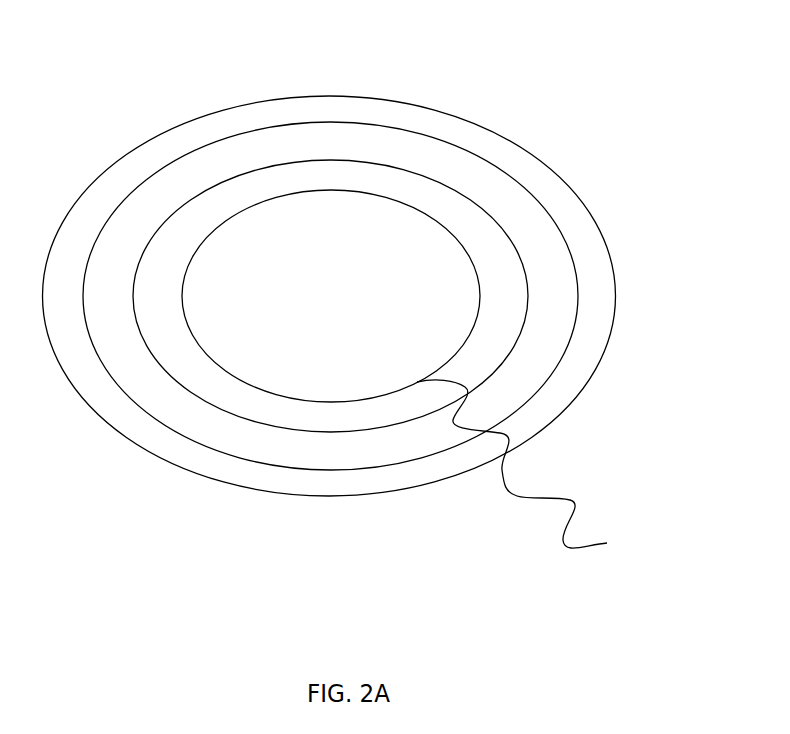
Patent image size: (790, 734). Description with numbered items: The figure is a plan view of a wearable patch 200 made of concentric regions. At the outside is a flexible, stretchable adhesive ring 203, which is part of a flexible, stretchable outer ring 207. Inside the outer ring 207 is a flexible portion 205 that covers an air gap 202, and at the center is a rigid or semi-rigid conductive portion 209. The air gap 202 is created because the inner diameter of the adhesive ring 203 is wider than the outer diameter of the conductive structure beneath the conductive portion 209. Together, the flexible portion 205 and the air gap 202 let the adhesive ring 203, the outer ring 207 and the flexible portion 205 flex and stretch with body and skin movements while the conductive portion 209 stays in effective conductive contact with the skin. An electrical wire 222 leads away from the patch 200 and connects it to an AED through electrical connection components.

The wearable patch 200 is at (342, 42).
The air gap 202 is at (389, 244).
The adhesive ring 203 is at (398, 112).
The flexible portion 205 is at (284, 168).
The outer ring 207 is at (210, 427).
The conductive portion 209 is at (331, 296).
The electrical wire 222 is at (513, 495).